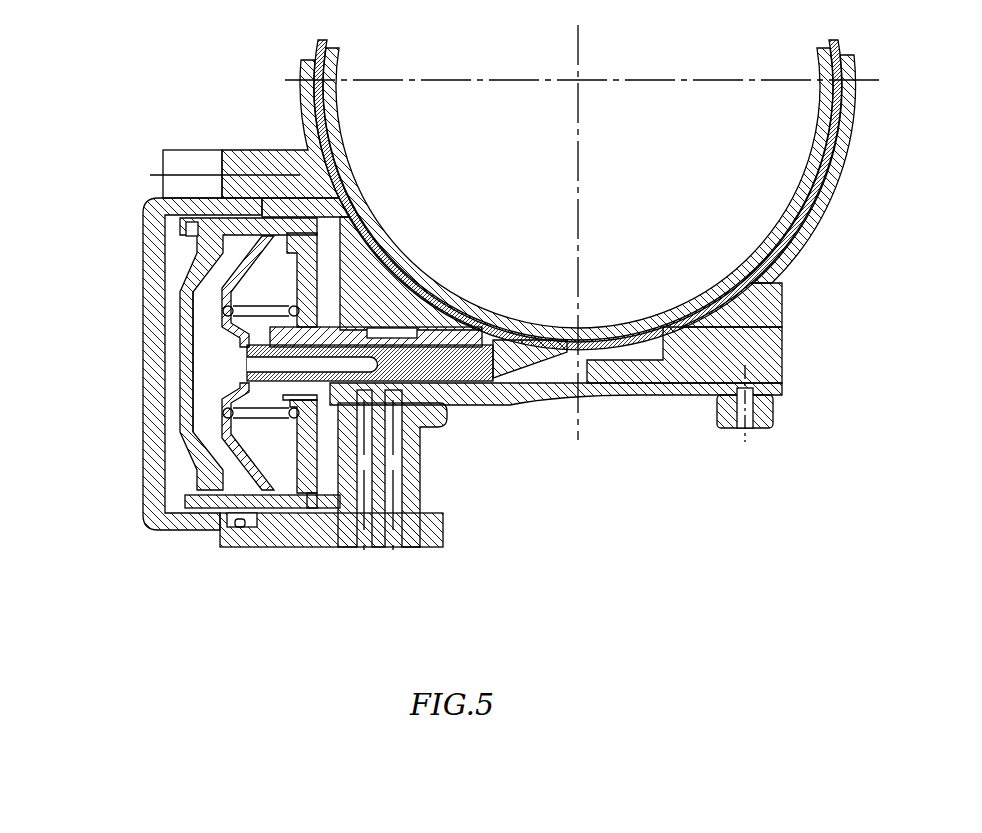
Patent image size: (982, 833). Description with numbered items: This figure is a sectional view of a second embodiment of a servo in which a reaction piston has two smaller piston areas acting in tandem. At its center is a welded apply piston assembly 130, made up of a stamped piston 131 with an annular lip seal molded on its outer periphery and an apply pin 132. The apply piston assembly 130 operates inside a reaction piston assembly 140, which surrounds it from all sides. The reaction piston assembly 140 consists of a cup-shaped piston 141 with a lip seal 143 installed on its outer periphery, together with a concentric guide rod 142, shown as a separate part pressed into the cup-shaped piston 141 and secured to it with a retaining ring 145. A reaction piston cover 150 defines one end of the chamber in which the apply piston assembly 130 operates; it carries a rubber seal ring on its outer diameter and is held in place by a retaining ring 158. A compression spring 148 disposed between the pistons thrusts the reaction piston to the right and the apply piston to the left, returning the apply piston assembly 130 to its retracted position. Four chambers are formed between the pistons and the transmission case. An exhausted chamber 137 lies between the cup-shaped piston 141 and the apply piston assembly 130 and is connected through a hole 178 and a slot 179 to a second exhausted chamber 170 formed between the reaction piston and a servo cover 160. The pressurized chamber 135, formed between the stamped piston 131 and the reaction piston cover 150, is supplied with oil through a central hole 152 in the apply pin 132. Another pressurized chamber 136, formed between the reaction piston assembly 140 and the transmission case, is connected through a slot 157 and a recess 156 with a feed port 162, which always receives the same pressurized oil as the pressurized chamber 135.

The apply piston assembly 130 is at (235, 345).
The stamped piston 131 is at (232, 305).
The apply pin 132 is at (484, 386).
The pressurized chamber 135 is at (207, 386).
The pressurized chamber 136 is at (350, 322).
The exhausted chamber 137 is at (263, 212).
The reaction piston assembly 140 is at (307, 427).
The cup-shaped piston 141 is at (333, 262).
The guide rod 142 is at (608, 400).
The lip seal 143 is at (312, 216).
The retaining ring 145 is at (283, 402).
The compression spring 148 is at (237, 432).
The reaction piston cover 150 is at (162, 278).
The central hole 152 is at (352, 312).
The recess 156 is at (412, 322).
The slot 157 is at (382, 316).
The retaining ring 158 is at (187, 222).
The servo cover 160 is at (193, 170).
The feed port 162 is at (397, 432).
The exhausted chamber 170 is at (180, 255).
The hole 178 is at (292, 503).
The slot 179 is at (222, 530).